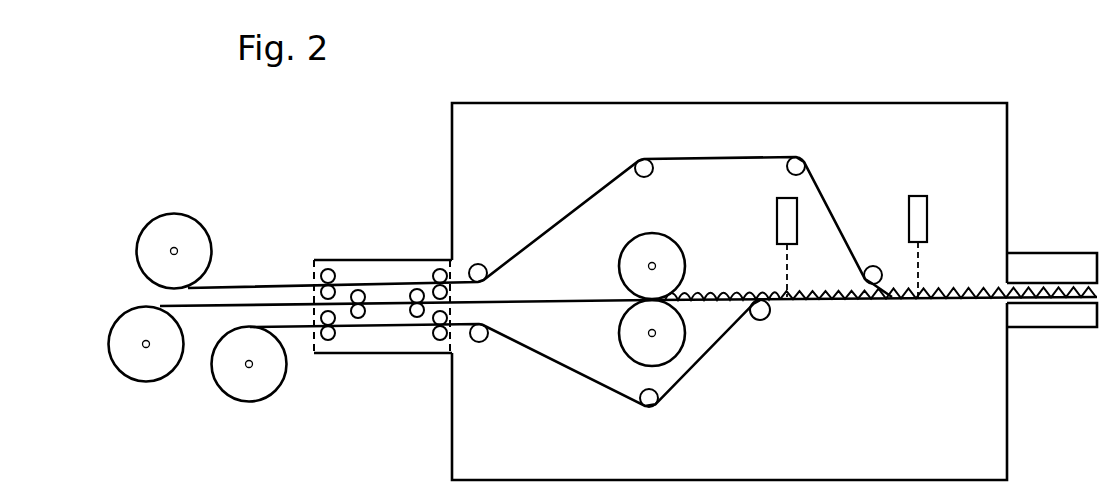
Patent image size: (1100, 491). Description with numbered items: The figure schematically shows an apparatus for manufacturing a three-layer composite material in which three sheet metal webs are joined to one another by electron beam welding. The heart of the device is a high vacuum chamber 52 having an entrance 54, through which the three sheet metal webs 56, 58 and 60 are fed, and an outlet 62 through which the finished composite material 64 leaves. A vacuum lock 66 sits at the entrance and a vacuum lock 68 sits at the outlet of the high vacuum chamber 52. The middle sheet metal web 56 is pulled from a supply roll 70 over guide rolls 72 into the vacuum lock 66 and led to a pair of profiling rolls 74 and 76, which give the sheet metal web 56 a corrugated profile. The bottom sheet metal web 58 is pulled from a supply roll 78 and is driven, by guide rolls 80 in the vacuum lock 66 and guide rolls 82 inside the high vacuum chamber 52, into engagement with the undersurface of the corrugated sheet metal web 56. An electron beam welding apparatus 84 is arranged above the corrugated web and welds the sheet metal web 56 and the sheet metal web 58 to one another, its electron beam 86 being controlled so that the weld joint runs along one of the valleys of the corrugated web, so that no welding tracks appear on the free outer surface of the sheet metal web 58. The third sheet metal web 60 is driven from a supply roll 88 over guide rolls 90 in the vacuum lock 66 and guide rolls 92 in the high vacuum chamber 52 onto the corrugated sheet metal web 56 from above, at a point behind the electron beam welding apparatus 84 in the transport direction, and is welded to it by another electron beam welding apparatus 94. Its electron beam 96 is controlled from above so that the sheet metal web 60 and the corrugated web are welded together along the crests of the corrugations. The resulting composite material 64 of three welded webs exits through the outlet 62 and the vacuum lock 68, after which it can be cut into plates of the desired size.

The high vacuum chamber 52 is at (770, 112).
The entrance 54 is at (446, 336).
The middle sheet metal web 56 is at (543, 302).
The bottom sheet metal web 58 is at (565, 370).
The third sheet metal web 60 is at (540, 242).
The outlet 62 is at (1002, 300).
The composite material 64 is at (1067, 282).
The vacuum lock 66 is at (395, 258).
The vacuum lock 68 is at (1055, 322).
The supply roll 70 is at (160, 365).
The guide rolls 72 is at (356, 290).
The profiling roll 74 is at (632, 342).
The profiling roll 76 is at (672, 253).
The supply roll 78 is at (275, 382).
The guide rolls 80 is at (331, 341).
The guide rolls 82 is at (482, 345).
The electron beam welding apparatus 84 is at (782, 217).
The electron beam 86 is at (789, 258).
The supply roll 88 is at (172, 225).
The guide rolls 90 is at (322, 272).
The guide rolls 92 is at (482, 265).
The electron beam welding apparatus 94 is at (918, 205).
The electron beam 96 is at (920, 268).